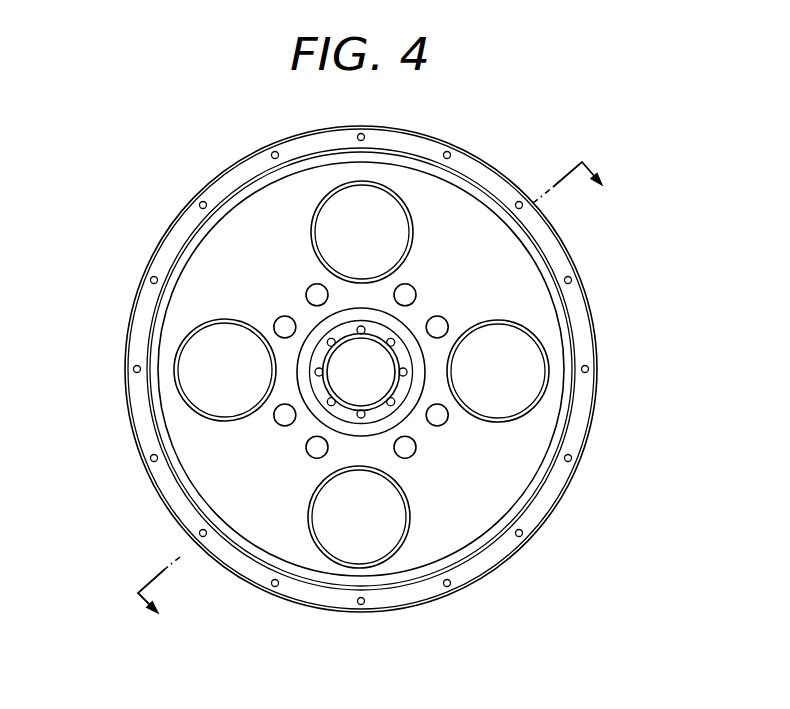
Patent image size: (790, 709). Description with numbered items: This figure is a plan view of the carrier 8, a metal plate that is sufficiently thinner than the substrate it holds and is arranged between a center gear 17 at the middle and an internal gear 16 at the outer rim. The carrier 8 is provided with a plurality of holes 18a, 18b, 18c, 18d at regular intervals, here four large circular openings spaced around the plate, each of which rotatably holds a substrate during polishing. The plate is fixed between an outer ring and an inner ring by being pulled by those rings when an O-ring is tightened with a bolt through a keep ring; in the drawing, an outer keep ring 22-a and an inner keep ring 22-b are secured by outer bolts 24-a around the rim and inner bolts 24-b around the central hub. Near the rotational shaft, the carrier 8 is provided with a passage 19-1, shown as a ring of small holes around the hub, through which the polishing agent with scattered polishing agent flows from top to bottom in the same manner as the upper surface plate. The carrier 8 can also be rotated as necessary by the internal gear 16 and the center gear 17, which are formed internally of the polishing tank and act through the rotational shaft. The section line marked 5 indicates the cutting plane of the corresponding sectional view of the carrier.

The carrier 8 is at (197, 262).
The internal gear 16 is at (200, 195).
The center gear 17 is at (332, 326).
The hole 18a is at (226, 408).
The hole 18b is at (392, 521).
The hole 18c is at (501, 413).
The hole 18d is at (392, 215).
The passage 19-1 is at (287, 430).
The keep ring 22-a is at (143, 297).
The keep ring 22-b is at (386, 334).
The bolt 24-a is at (130, 363).
The bolt 24-b is at (392, 340).
The section line 5- 5 is at (379, 402).